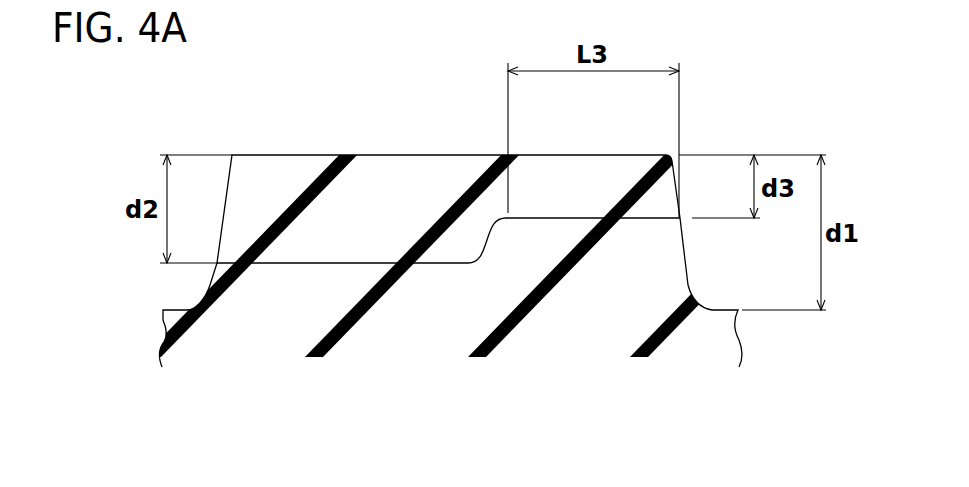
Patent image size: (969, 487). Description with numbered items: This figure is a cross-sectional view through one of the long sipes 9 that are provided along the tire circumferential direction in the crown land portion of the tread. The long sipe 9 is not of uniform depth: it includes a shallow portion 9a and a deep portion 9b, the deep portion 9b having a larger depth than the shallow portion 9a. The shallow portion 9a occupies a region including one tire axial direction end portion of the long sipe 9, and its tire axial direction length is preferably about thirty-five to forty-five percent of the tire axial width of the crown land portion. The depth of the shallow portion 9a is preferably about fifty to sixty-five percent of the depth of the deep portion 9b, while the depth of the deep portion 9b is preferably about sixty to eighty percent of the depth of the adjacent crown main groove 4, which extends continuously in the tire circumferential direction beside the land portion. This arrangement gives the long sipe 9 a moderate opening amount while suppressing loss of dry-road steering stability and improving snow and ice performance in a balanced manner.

The long sipe 9 is at (395, 184).
The shallow portion 9a is at (599, 212).
The deep portion 9b is at (318, 256).
The crown main groove 4 is at (709, 293).